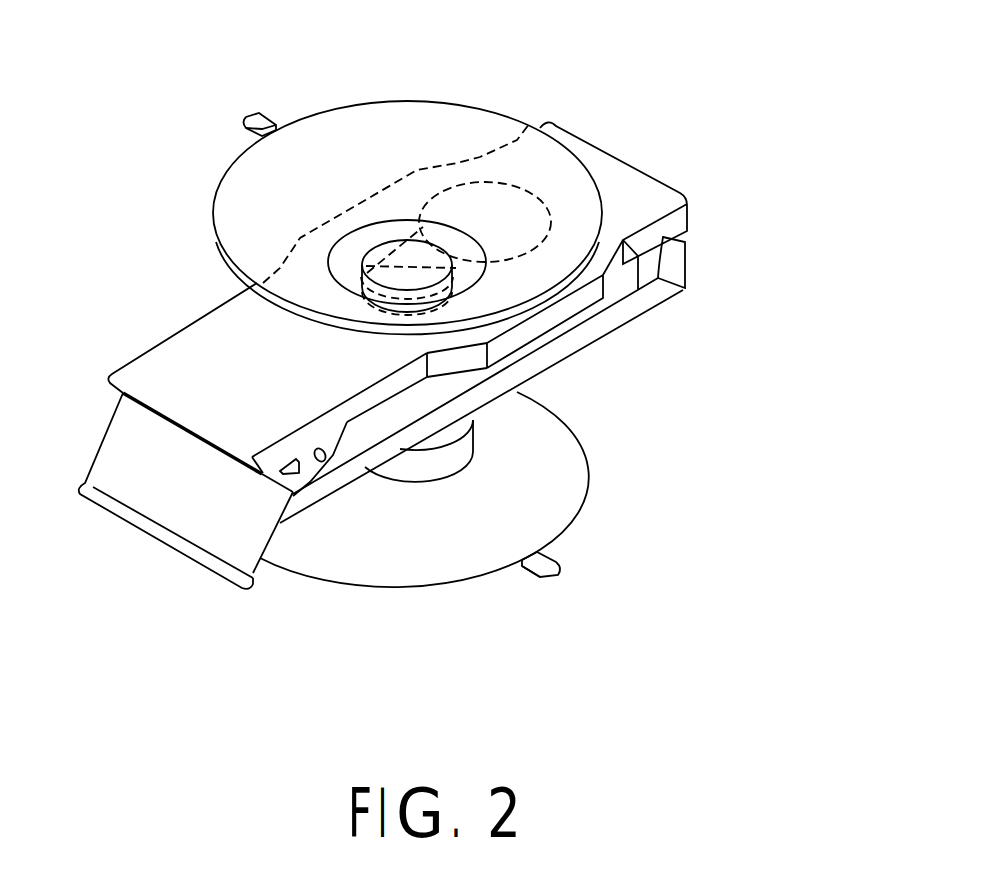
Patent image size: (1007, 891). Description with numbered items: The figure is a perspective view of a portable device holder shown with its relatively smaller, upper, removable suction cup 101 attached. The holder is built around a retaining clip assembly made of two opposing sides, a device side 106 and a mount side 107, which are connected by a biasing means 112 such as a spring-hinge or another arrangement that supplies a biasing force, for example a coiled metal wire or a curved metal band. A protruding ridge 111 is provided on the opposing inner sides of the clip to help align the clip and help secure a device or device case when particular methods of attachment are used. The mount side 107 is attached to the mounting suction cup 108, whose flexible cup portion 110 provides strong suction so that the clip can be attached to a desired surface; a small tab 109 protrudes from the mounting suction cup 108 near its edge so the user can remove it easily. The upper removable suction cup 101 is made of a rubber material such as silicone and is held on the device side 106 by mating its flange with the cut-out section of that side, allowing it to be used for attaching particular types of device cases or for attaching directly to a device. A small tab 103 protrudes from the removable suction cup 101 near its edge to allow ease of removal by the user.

The upper removable suction cup 101 is at (391, 110).
The small tab 103 is at (255, 117).
The device side 106 is at (705, 205).
The mount side 107 is at (707, 262).
The mounting suction cup 108 is at (490, 490).
The small tab 109 is at (560, 574).
The cup portion 110 is at (603, 476).
The protruding ridge 111 is at (659, 300).
The biasing means 112 is at (317, 480).